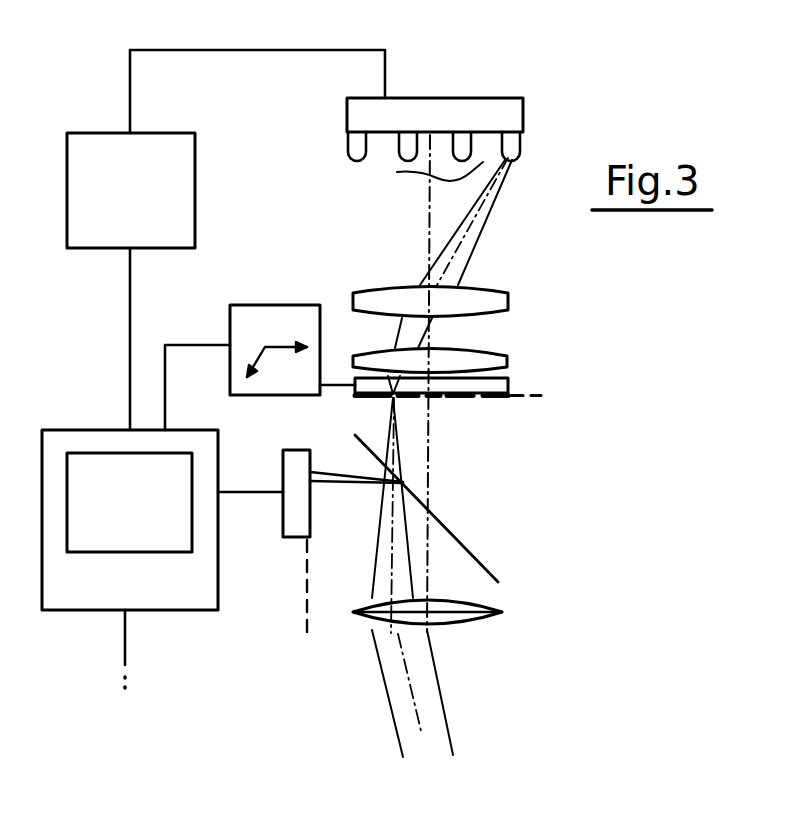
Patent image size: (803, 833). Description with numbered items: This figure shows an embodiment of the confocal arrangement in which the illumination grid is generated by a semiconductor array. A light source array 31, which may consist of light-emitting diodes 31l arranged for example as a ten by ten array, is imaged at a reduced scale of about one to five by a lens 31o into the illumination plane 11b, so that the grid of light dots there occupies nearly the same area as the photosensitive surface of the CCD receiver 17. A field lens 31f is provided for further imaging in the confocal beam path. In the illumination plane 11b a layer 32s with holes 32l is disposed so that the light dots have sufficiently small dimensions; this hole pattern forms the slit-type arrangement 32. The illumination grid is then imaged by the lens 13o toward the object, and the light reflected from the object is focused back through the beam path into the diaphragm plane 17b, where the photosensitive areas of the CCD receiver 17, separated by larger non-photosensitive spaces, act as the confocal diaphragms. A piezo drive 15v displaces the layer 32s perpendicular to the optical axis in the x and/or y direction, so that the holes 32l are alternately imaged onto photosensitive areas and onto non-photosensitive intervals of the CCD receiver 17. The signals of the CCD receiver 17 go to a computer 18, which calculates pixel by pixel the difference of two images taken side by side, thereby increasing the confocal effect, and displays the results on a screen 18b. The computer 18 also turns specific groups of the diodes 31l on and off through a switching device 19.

The light source array 31 is at (442, 80).
The light-emitting diodes 31l is at (456, 162).
The lens 31o is at (508, 302).
The field lens 31f is at (485, 360).
The layer 32s is at (362, 399).
The holes 32l is at (440, 398).
The slit arrangement 32 is at (445, 440).
The illumination plane 11b is at (540, 399).
The lens 13o is at (502, 613).
The CCD receiver 17 is at (298, 512).
The diaphragm plane 17b is at (307, 596).
The piezo drive 15v is at (254, 305).
The switching device 19 is at (144, 205).
The computer 18 is at (62, 435).
The screen 18b is at (80, 580).